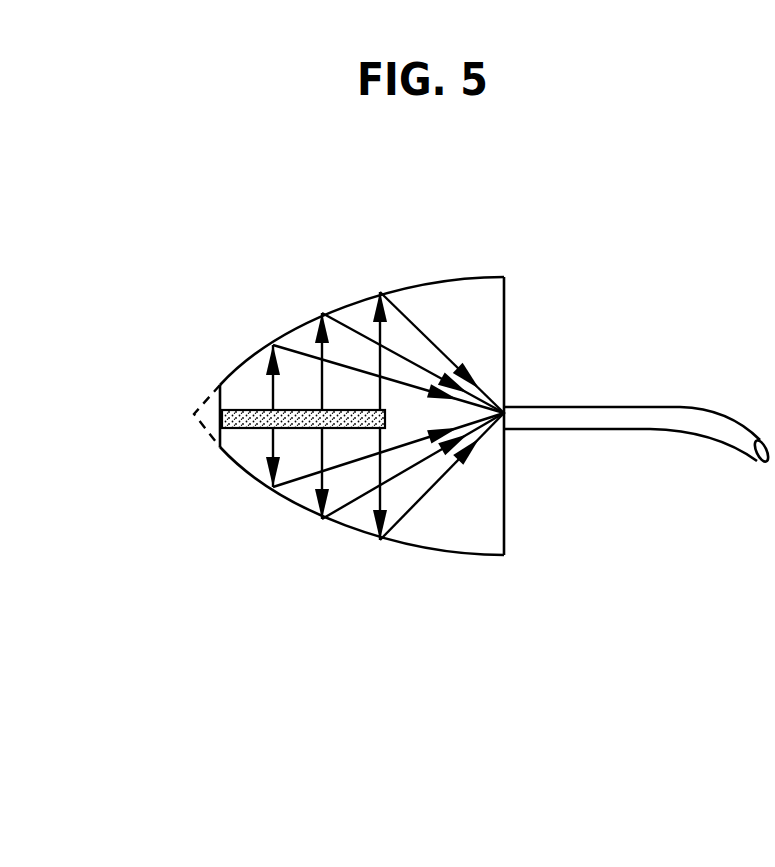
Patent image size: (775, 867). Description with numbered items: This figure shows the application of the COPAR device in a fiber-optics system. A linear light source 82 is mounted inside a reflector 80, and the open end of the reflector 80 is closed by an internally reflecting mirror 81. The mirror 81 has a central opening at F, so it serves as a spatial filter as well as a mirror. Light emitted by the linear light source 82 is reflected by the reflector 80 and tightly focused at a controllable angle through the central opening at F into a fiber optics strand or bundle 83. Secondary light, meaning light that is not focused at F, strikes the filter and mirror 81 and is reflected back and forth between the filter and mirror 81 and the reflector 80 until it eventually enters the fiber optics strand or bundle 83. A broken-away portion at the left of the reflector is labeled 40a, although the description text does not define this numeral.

The reflector 80 is at (450, 556).
The internally reflecting mirror 81 is at (505, 331).
The linear light source 82 is at (250, 430).
The fiber optics strand or bundle 83 is at (598, 430).
The central opening F is at (508, 408).
The broken-away portion of light guide 40a is at (192, 412).